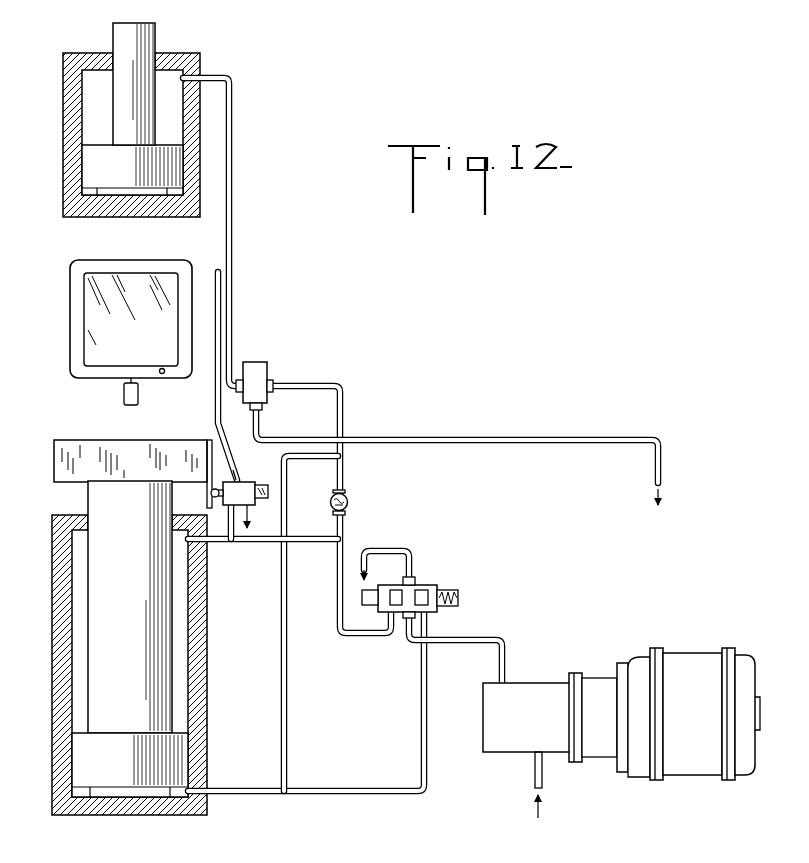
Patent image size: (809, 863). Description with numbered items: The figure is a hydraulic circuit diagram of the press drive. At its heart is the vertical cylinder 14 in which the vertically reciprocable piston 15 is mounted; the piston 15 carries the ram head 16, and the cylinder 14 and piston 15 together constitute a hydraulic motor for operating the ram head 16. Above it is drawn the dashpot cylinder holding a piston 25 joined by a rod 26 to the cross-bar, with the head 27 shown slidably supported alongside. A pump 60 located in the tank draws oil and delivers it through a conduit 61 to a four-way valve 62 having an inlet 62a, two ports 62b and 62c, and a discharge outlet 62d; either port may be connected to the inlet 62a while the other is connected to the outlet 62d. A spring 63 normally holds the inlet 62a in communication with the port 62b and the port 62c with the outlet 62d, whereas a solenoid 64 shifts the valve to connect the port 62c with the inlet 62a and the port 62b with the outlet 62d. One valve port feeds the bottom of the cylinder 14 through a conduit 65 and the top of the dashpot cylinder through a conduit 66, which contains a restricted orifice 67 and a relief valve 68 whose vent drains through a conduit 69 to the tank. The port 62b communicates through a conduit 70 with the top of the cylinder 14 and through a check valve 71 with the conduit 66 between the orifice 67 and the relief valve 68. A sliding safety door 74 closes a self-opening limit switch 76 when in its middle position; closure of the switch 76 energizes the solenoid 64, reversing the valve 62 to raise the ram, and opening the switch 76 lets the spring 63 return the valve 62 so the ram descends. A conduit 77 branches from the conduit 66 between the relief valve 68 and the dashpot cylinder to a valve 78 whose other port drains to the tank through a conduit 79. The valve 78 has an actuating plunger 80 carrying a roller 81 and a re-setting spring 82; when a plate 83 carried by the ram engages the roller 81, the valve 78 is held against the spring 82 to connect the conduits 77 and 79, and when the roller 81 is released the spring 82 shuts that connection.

The vertical cylinder 14 is at (207, 748).
The piston 15 is at (80, 768).
The ram head 16 is at (67, 470).
The piston 25 is at (95, 170).
The rod 26 is at (145, 79).
The head 27 is at (66, 205).
The pump 60 is at (523, 740).
The conduit 61 is at (507, 660).
The four-way valve 62 is at (386, 588).
The inlet 62a is at (406, 630).
The port 62b is at (391, 618).
The port 62c is at (425, 590).
The discharge outlet 62d is at (411, 580).
The spring 63 is at (459, 598).
The solenoid 64 is at (371, 605).
The conduit 65 is at (353, 795).
The conduit 66 is at (233, 200).
The restricted orifice 67 is at (288, 460).
The relief valve 68 is at (262, 373).
The conduit 69 is at (468, 440).
The conduit 70 is at (262, 550).
The check valve 71 is at (349, 502).
The safety door 74 is at (95, 330).
The self-opening limit switch 76 is at (124, 395).
The conduit 77 is at (221, 340).
The valve 78 is at (239, 525).
The conduit 79 is at (250, 518).
The actuating plunger 80 is at (228, 505).
The roller 81 is at (235, 470).
The re-setting spring 82 is at (262, 484).
The plate 83 is at (211, 491).